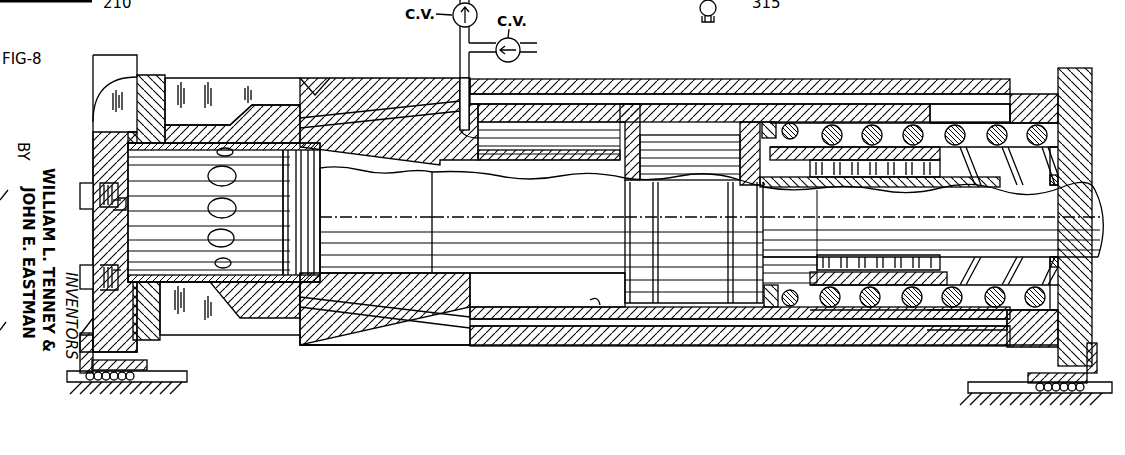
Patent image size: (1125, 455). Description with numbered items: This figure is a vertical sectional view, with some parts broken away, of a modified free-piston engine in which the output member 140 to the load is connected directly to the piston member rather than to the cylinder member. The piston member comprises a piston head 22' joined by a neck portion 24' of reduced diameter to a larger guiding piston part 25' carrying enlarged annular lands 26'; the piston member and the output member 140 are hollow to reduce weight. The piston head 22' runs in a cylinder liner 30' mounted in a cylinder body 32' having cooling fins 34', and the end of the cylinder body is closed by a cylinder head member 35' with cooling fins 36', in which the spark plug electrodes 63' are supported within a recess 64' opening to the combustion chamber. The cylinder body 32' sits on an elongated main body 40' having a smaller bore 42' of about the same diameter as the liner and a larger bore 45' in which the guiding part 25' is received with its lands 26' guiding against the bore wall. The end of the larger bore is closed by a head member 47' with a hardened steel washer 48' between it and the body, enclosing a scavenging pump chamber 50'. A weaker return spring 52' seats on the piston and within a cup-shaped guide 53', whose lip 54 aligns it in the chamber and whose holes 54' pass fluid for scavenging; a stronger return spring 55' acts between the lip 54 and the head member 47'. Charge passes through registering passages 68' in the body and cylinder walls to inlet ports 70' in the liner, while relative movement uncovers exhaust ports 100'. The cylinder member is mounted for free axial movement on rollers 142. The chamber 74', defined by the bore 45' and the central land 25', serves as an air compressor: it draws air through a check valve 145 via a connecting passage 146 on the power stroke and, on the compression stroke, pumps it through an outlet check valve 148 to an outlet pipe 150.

The piston head 22' is at (280, 212).
The neck portion 24' is at (528, 197).
The guiding piston part 25' is at (692, 203).
The annular lands 26' is at (744, 83).
The cylinder liner 30' is at (226, 324).
The cylinder body 32' is at (163, 93).
The cooling fins 34' is at (232, 93).
The cylinder head member 35' is at (92, 98).
The cooling fins 36' is at (92, 203).
The main body 40' is at (740, 74).
The smaller bore 42' is at (389, 226).
The larger bore 45' is at (599, 336).
The head member 47' is at (1066, 202).
The hardened steel washer 48' is at (992, 198).
The scavenging pump chamber 50' is at (914, 177).
The return spring 52' is at (880, 115).
The cup-shaped guide 53' is at (878, 310).
The lip 54 is at (793, 248).
The holes 54' is at (755, 248).
The return spring 55' is at (871, 175).
The electrodes 63' is at (135, 218).
The recess 64' is at (136, 254).
The passages 68' is at (679, 209).
The inlet ports 70' is at (257, 212).
The pumping chamber 74' is at (547, 323).
The exhaust ports 100' is at (201, 208).
The output member 140 is at (1014, 216).
The rollers 142 is at (159, 370).
The check valve 145 is at (520, 42).
The connecting passage 146 is at (460, 62).
The outlet check valve 148 is at (454, 27).
The outlet pipe 150 is at (477, 8).